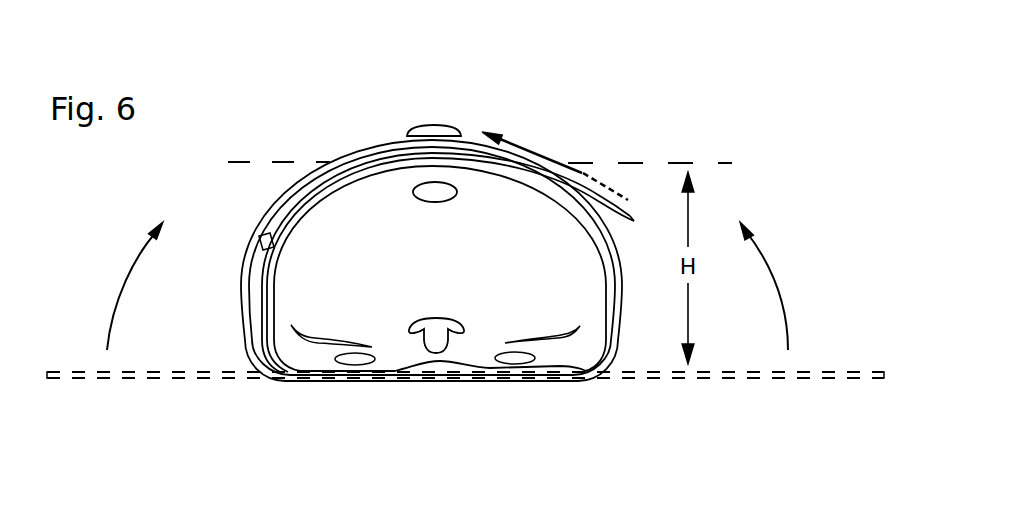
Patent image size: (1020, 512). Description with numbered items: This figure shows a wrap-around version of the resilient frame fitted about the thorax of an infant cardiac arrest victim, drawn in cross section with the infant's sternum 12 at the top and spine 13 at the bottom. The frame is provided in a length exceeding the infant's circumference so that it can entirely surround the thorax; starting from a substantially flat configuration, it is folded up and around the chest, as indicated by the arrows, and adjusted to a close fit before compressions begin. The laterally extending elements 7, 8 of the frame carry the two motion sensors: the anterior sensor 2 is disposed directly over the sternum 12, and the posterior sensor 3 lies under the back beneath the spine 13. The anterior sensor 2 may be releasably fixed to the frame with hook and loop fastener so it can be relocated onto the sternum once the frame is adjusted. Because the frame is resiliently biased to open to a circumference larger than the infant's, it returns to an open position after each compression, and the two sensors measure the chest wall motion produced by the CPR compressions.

The anterior sensor 2 is at (438, 122).
The posterior sensor 3 is at (455, 377).
The laterally extending element 7 is at (632, 160).
The laterally extending element 8 is at (553, 383).
The sternum 12 is at (415, 195).
The spine 13 is at (435, 318).